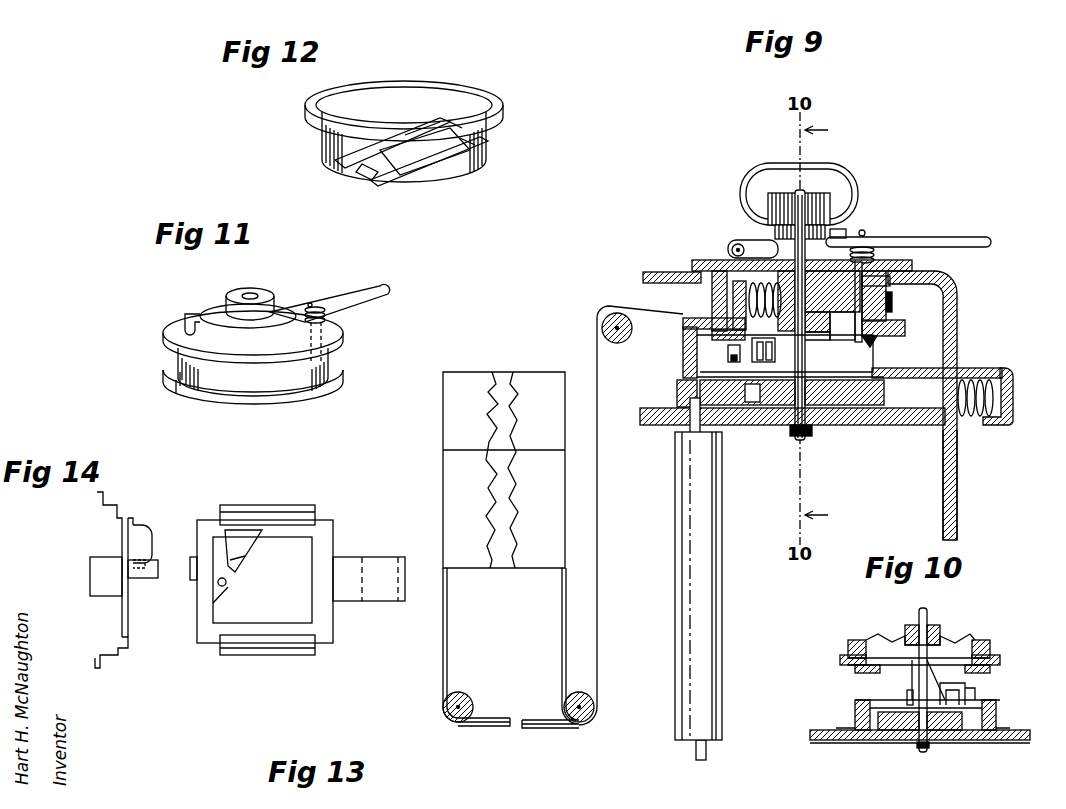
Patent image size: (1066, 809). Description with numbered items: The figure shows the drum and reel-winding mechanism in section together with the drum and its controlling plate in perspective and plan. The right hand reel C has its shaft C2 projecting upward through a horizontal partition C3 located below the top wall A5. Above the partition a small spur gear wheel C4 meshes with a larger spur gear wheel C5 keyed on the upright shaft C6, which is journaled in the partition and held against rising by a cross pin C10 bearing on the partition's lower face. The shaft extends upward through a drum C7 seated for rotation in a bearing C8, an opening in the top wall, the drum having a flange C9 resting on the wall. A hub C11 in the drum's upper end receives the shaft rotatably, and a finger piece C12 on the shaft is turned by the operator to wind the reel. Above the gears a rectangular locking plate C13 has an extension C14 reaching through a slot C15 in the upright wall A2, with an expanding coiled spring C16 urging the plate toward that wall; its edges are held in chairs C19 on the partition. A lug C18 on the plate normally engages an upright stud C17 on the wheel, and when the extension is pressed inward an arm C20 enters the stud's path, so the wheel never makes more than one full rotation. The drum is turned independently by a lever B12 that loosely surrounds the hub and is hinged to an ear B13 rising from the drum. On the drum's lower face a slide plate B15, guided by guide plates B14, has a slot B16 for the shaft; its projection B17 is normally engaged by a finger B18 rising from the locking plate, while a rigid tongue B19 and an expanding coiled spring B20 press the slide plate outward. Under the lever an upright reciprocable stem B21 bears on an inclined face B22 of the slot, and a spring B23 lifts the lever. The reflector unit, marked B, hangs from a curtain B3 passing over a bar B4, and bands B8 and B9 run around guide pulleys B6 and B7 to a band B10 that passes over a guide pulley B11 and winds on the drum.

In FIG. 9, the finger piece C12 is at (822, 165).
In FIG. 9, the hub C11 is at (778, 240).
In FIG. 10, the hub C11 is at (905, 630).
In FIG. 11, the hub C11 is at (270, 295).
In FIG. 9, the ear B13 is at (740, 246).
In FIG. 11, the ear B13 is at (203, 327).
In FIG. 9, the lever B12 is at (940, 239).
In FIG. 11, the lever B12 is at (372, 290).
In FIG. 9, the expanding coiled spring B20 is at (835, 232).
In FIG. 9, the expanding coiled spring B23 is at (880, 248).
In FIG. 11, the expanding coiled spring B23 is at (328, 312).
In FIG. 9, the upright reciprocable stem B21 is at (882, 266).
In FIG. 11, the upright reciprocable stem B21 is at (320, 338).
In FIG. 9, the flange C9 is at (700, 262).
In FIG. 9, the top wall A5 is at (660, 274).
In FIG. 9, the rigid tongue B19 is at (712, 290).
In FIG. 10, the rigid tongue B19 is at (940, 632).
In FIG. 12, the rigid tongue B19 is at (415, 135).
In FIG. 9, the finger B18 is at (745, 300).
In FIG. 10, the finger B18 is at (955, 685).
In FIG. 14, the finger B18 is at (147, 576).
In FIG. 9, the upright shaft C6 is at (793, 432).
In FIG. 10, the upright shaft C6 is at (926, 612).
In FIG. 9, the bearing C8 is at (892, 284).
In FIG. 9, the slide plate B15 is at (900, 329).
In FIG. 12, the slide plate B15 is at (470, 142).
In FIG. 9, the band B10 is at (893, 304).
In FIG. 9, the inclined face B22 is at (874, 339).
In FIG. 12, the inclined face B22 is at (375, 176).
In FIG. 9, the guide plates B14 is at (870, 337).
In FIG. 12, the guide plates B14 is at (462, 163).
In FIG. 9, the slot B16 is at (828, 331).
In FIG. 10, the slot B16 is at (870, 650).
In FIG. 12, the slot B16 is at (400, 160).
In FIG. 9, the drum C7 is at (950, 290).
In FIG. 10, the drum C7 is at (848, 650).
In FIG. 12, the drum C7 is at (322, 135).
In FIG. 11, the drum C7 is at (335, 362).
In FIG. 9, the upright wall A2 is at (955, 510).
In FIG. 9, the locking plate C13 is at (905, 368).
In FIG. 13, the locking plate C13 is at (320, 625).
In FIG. 9, the slot C15 is at (958, 372).
In FIG. 9, the extension C14 is at (1014, 392).
In FIG. 14, the extension C14 is at (112, 590).
In FIG. 13, the extension C14 is at (367, 568).
In FIG. 9, the expanding coiled spring C16 is at (962, 383).
In FIG. 9, the projection B17 is at (690, 330).
In FIG. 12, the projection B17 is at (457, 128).
In FIG. 9, the upright stud C17 is at (731, 352).
In FIG. 10, the upright stud C17 is at (908, 696).
In FIG. 13, the upright stud C17 is at (218, 580).
In FIG. 9, the lug C18 is at (760, 364).
In FIG. 10, the lug C18 is at (880, 700).
In FIG. 13, the lug C18 is at (218, 592).
In FIG. 9, the small spur gear wheel C4 is at (680, 390).
In FIG. 9, the larger spur gear wheel C5 is at (865, 395).
In FIG. 10, the larger spur gear wheel C5 is at (975, 740).
In FIG. 9, the arm C20 is at (754, 403).
In FIG. 10, the arm C20 is at (975, 688).
In FIG. 14, the arm C20 is at (143, 528).
In FIG. 13, the arm C20 is at (247, 545).
In FIG. 9, the horizontal partition C3 is at (662, 418).
In FIG. 10, the horizontal partition C3 is at (890, 742).
In FIG. 9, the shaft C2 is at (692, 432).
In FIG. 9, the right hand reel C is at (700, 612).
In FIG. 9, the cross pin C10 is at (810, 430).
In FIG. 10, the cross pin C10 is at (928, 746).
In FIG. 9, the guide pulley B11 is at (603, 330).
In FIG. 9, the plate B is at (443, 484).
In FIG. 9, the curtain B3 is at (460, 410).
In FIG. 9, the cord or band B8 is at (447, 643).
In FIG. 9, the cord or band B9 is at (562, 643).
In FIG. 9, the guide pulley B6 is at (460, 722).
In FIG. 9, the guide pulley B7 is at (580, 722).
In FIG. 10, the bar B4 is at (860, 668).
In FIG. 10, the chairs C19 is at (850, 742).
In FIG. 14, the chairs C19 is at (125, 656).
In FIG. 13, the chairs C19 is at (266, 676).